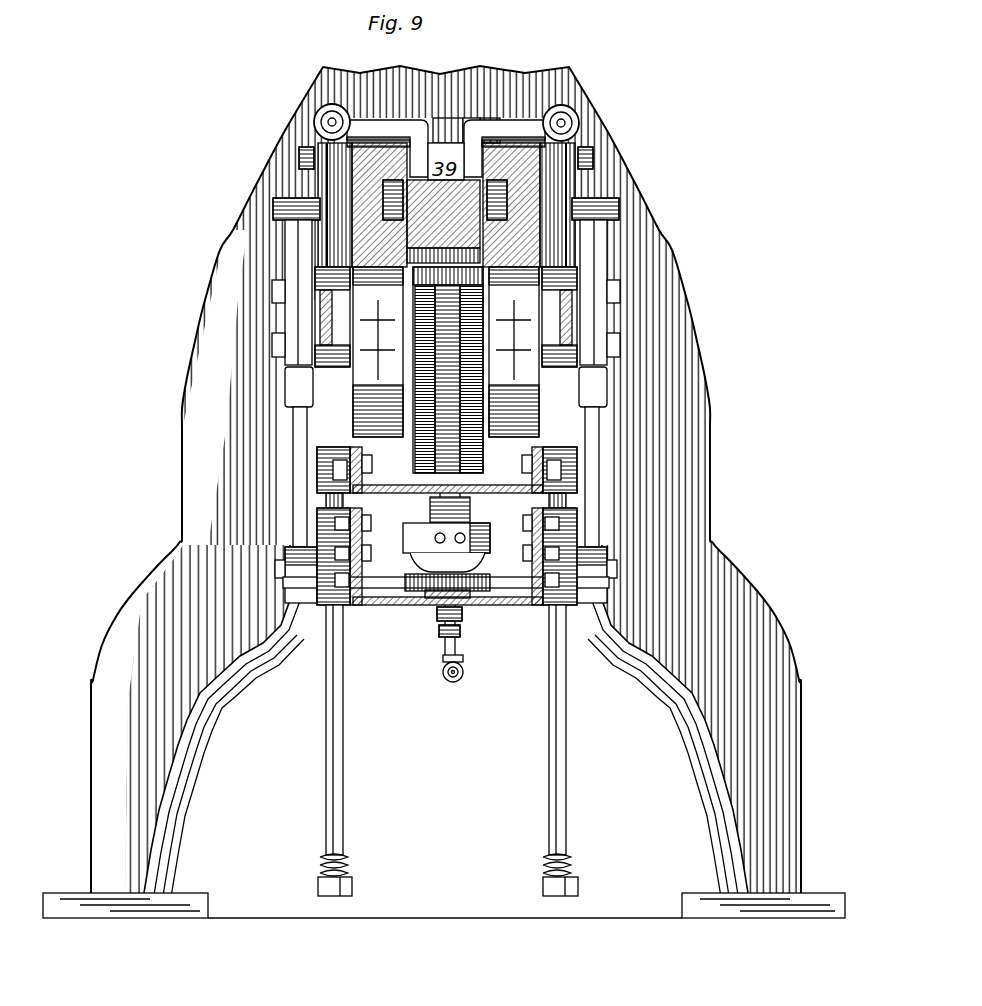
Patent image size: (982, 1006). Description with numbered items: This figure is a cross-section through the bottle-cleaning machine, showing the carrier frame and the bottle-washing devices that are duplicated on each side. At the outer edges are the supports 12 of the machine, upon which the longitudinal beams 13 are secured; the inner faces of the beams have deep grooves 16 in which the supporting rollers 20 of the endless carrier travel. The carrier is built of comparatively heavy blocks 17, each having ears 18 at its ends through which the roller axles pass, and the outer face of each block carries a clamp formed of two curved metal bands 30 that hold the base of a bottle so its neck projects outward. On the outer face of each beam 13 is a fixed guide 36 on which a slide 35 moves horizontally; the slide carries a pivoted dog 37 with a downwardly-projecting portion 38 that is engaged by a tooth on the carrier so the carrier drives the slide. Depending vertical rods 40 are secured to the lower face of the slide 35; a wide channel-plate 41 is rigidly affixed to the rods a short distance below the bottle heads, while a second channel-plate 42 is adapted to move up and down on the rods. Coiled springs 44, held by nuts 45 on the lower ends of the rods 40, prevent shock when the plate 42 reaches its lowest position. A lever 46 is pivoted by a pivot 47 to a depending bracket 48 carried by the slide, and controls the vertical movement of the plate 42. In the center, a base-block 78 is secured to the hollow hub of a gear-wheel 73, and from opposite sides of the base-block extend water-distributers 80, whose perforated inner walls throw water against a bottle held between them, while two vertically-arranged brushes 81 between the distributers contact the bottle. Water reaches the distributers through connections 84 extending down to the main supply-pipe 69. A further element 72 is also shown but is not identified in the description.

The supports 12 is at (137, 603).
The longitudinal beam 13 is at (357, 178).
The grooves 16 is at (388, 198).
The blocks 17 is at (443, 214).
The ears 18 is at (505, 172).
The rollers 20 is at (378, 200).
The curved metal bands 30 is at (440, 262).
The slide 35 is at (330, 183).
The fixed guide 36 is at (342, 205).
The pivoted dog 37 is at (381, 122).
The downwardly-projecting portion 38 is at (470, 162).
The depending vertical rods 40 is at (345, 830).
The channel-plate 41 is at (508, 492).
The channel-plate 42 is at (502, 605).
The coiled springs 44 is at (350, 868).
The nuts 45 is at (355, 888).
The lever 46 is at (300, 238).
The pivot 47 is at (446, 352).
The depending bracket 48 is at (332, 322).
The main supply-pipe 69 is at (465, 672).
The collar 72 is at (445, 592).
The gear-wheel 73 is at (410, 580).
The base-block 78 is at (480, 537).
The water-distributer 80 is at (448, 370).
The brushes 81 is at (418, 450).
The connections 84 is at (445, 630).